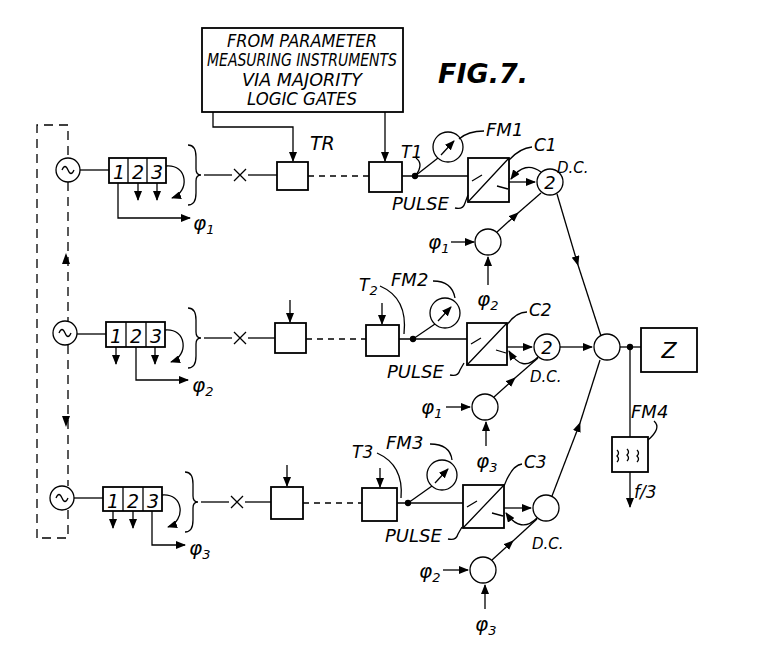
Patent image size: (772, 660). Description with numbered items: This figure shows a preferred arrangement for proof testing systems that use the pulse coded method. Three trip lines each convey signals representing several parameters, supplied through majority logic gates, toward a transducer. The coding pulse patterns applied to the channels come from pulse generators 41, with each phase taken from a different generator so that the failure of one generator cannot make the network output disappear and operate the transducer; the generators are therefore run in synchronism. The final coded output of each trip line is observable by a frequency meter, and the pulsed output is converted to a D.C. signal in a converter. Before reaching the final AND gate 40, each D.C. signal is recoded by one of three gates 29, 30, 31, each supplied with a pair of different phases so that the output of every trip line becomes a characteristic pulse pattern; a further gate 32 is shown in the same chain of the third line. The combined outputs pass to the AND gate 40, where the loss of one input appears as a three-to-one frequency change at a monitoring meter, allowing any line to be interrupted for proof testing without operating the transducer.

The gate 29 is at (502, 241).
The gate 30 is at (499, 410).
The gate 31 is at (521, 567).
The adder circuit of channel 3 32 is at (556, 499).
The AND gate 40 is at (617, 338).
The pulse generators 41 is at (79, 160).